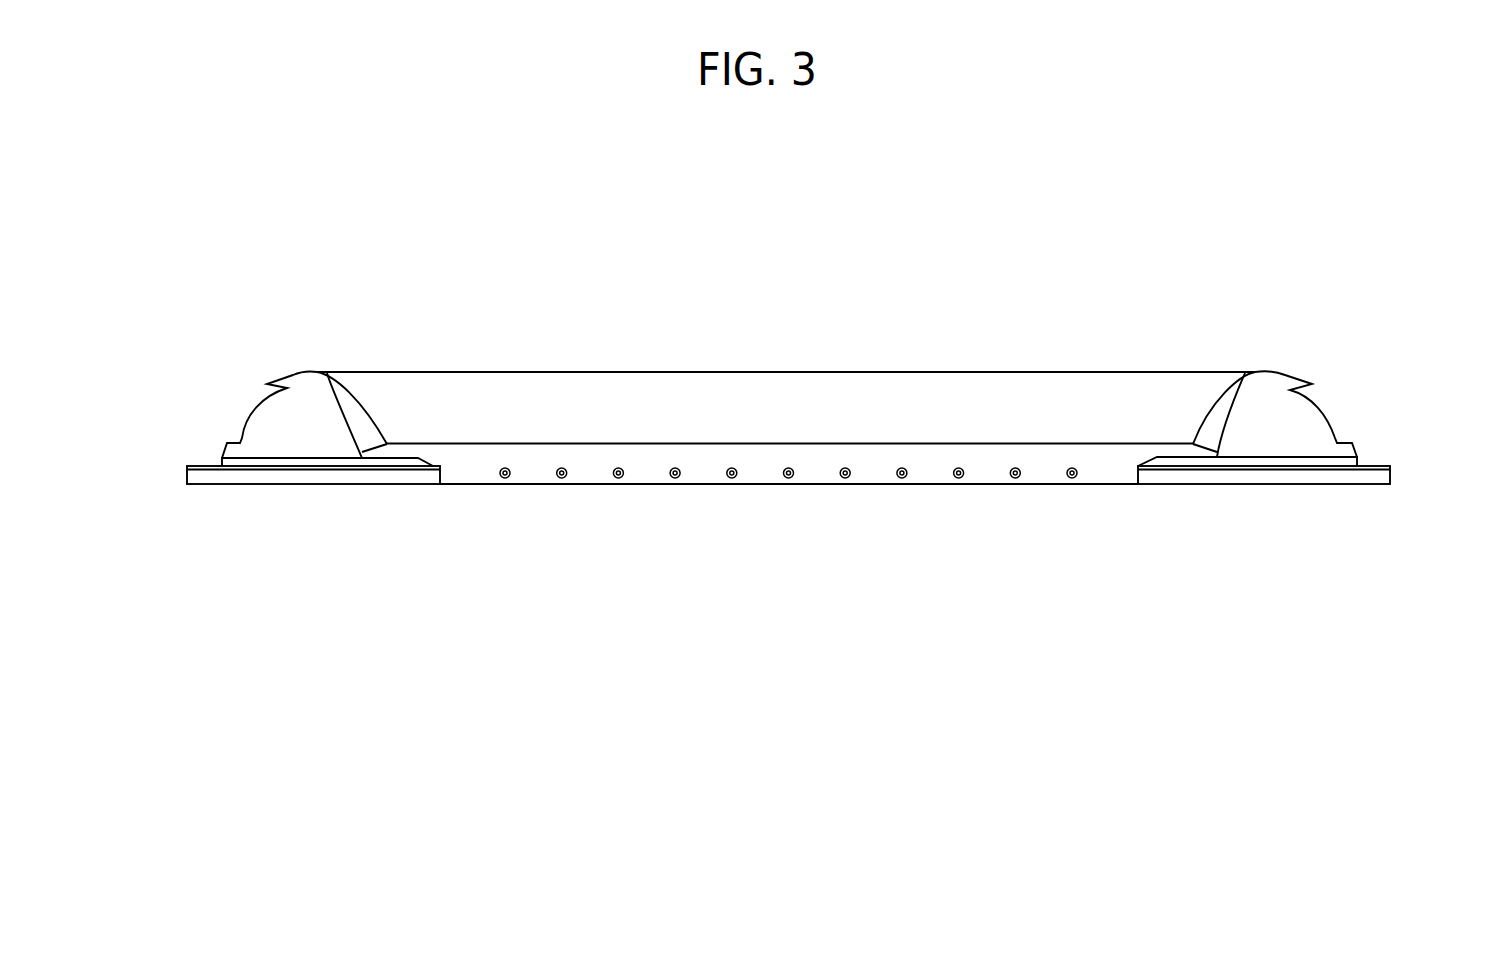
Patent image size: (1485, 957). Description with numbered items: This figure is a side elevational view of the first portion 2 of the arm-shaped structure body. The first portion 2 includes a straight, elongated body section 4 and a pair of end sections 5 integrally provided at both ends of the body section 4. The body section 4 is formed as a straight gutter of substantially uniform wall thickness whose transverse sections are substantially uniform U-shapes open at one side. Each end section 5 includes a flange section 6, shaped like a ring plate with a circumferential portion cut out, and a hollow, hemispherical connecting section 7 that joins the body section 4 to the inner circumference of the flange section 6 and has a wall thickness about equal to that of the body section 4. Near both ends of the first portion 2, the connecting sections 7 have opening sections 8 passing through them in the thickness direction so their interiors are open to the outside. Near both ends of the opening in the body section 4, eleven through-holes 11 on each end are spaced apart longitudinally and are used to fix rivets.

The first portion 2 is at (655, 318).
The body section 4 is at (882, 393).
The end section 5 is at (273, 365).
The flange section 6 is at (187, 472).
The connecting section 7 is at (307, 390).
The opening section 8 is at (263, 405).
The through-hole 11 is at (618, 478).